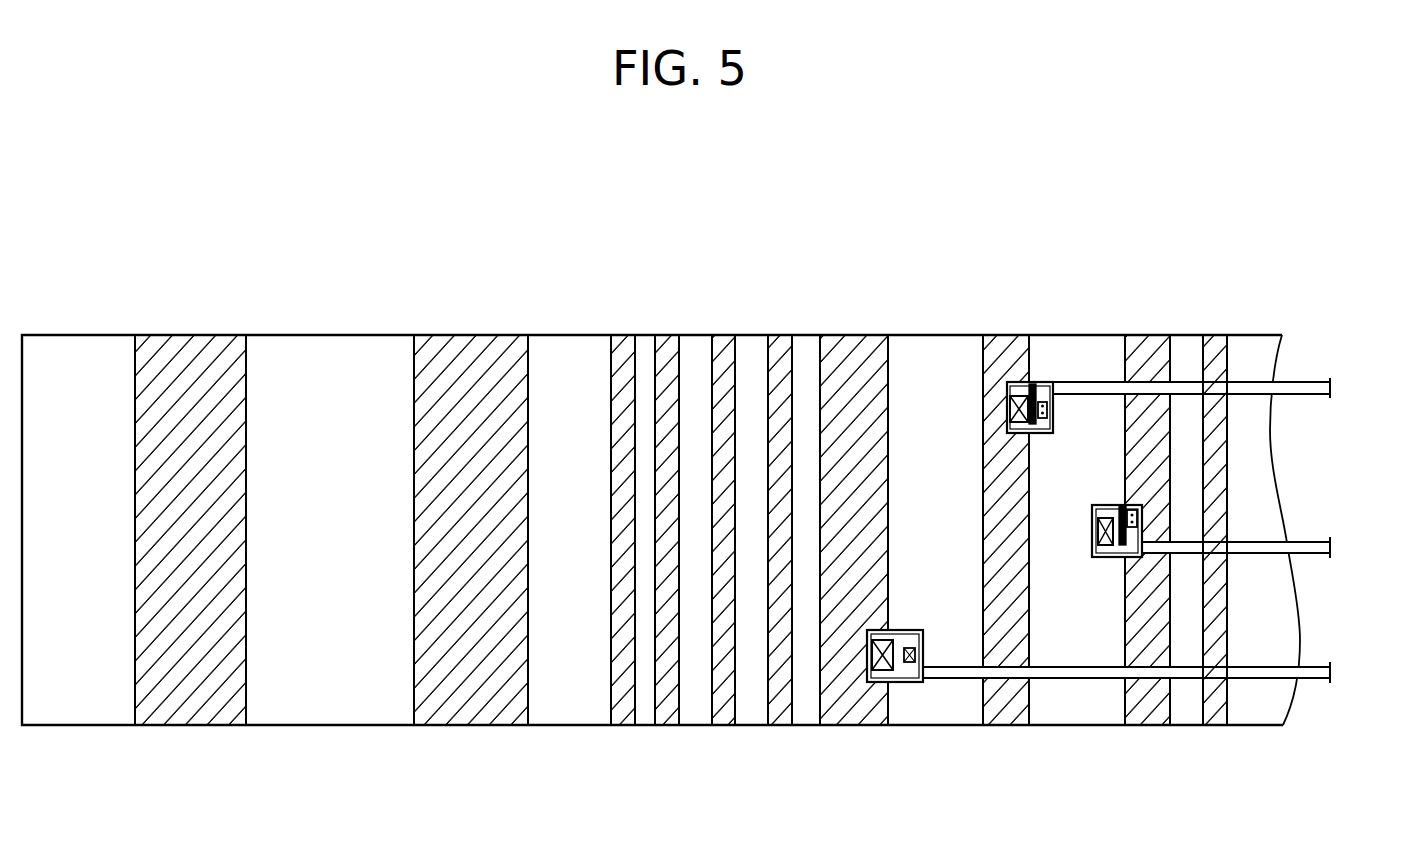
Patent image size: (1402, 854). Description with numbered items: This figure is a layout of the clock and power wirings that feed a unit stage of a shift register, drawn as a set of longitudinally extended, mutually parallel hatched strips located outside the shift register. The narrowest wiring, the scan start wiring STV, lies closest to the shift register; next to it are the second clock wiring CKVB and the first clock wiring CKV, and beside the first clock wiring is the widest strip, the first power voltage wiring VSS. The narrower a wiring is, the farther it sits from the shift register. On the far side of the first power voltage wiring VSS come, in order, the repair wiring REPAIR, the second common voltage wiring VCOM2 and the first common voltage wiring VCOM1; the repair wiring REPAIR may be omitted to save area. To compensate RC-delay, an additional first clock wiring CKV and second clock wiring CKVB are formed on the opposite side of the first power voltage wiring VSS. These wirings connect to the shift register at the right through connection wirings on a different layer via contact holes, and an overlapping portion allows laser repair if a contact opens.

The first common voltage wiring VCOM1 is at (190, 510).
The second common voltage wiring VCOM2 is at (471, 510).
The repair wiring REPAIR is at (679, 319).
The second clock wiring CKVB is at (1043, 510).
The first clock wiring CKV is at (1070, 510).
The first power voltage wiring VSS is at (1100, 510).
The scan start wiring STV is at (1213, 510).